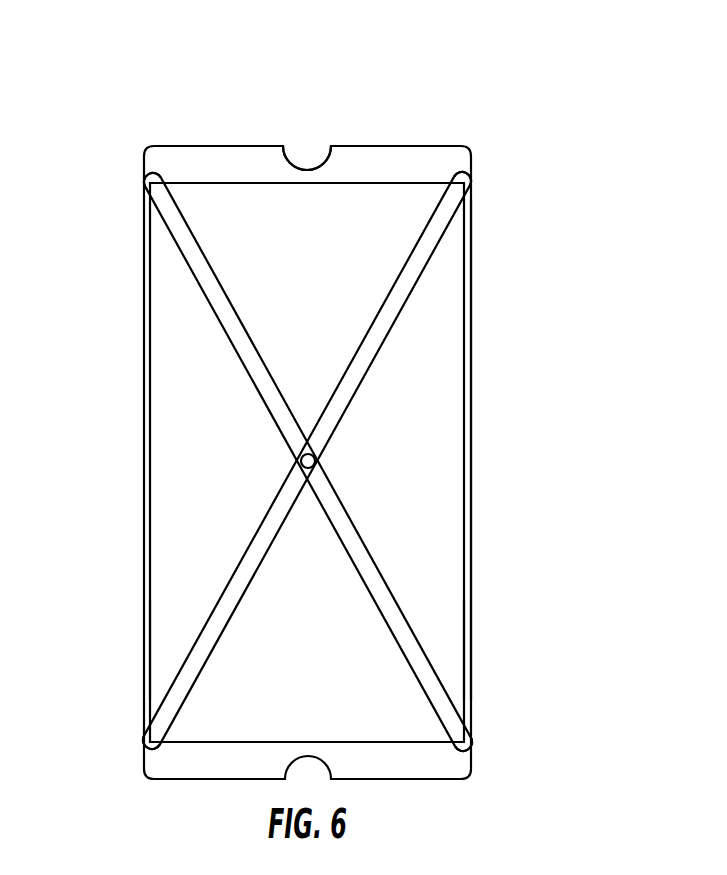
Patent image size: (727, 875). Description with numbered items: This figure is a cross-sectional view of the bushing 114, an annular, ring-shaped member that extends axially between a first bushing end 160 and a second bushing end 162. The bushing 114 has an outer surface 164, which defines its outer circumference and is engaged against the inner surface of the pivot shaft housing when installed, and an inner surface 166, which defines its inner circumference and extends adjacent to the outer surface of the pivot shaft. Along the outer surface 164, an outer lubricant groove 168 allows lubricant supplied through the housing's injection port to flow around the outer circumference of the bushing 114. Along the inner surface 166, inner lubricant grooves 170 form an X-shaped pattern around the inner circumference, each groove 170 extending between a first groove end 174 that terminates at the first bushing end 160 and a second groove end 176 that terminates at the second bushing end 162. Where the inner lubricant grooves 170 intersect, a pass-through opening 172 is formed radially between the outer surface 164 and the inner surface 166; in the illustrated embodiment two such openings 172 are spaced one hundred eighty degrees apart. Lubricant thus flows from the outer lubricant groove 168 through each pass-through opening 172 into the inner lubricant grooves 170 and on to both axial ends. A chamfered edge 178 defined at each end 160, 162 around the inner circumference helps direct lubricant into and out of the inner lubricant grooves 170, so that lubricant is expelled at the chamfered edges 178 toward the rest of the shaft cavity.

The bushing 114 is at (481, 57).
The first bushing end 160 is at (143, 465).
The second bushing end 162 is at (472, 470).
The outer surface 164 is at (204, 146).
The inner surface 166 is at (167, 362).
The outer lubricant groove 168 is at (303, 160).
The inner lubricant grooves 170 is at (220, 307).
The pass-through openings 172 is at (301, 458).
The first groove end 174 is at (148, 184).
The second groove end 176 is at (473, 187).
The chamfered edge 178 is at (470, 636).